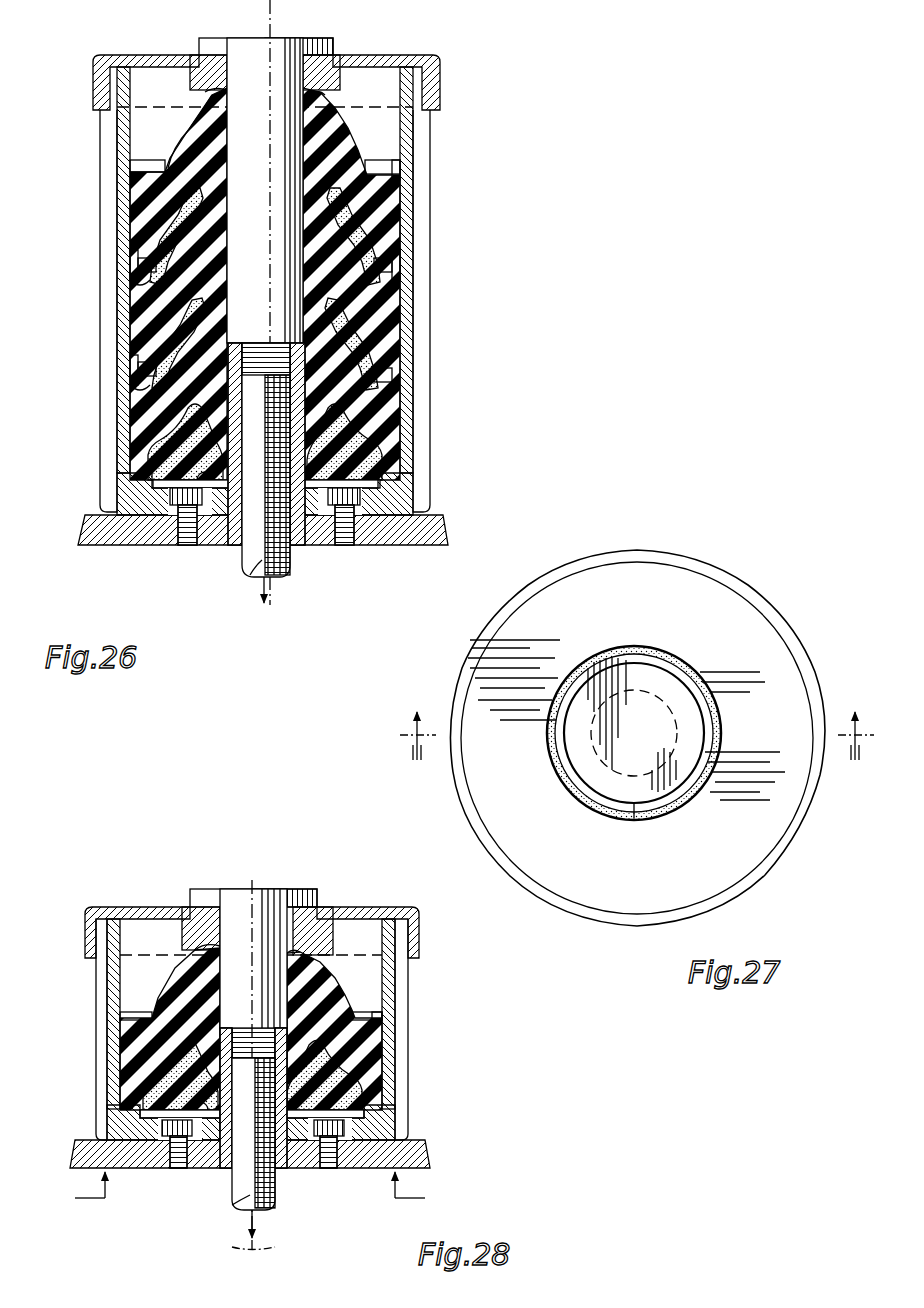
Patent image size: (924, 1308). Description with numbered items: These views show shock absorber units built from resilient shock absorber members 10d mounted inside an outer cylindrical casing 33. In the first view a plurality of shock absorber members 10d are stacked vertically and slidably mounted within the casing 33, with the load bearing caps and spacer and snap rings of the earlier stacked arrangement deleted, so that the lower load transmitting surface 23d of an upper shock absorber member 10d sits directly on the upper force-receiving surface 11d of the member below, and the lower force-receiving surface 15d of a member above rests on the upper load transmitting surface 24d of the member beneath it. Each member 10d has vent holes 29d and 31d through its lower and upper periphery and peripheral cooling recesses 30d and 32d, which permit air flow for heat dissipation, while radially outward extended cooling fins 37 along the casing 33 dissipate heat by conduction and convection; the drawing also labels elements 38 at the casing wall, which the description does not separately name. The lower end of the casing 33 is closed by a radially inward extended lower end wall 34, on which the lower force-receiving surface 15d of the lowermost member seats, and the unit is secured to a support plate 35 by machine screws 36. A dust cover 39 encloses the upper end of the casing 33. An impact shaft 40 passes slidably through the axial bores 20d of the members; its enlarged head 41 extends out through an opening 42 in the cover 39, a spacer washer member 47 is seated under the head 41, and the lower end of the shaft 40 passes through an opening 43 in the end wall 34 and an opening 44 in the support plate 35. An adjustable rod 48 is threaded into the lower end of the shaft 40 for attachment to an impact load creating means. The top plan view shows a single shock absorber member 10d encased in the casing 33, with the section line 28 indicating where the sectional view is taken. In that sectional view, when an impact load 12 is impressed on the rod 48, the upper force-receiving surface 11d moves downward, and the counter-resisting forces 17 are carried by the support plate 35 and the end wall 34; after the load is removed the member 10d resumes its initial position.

In FIG. 26, the shock absorber member 10d is at (150, 210).
In FIG. 28, the shock absorber member 10d is at (385, 1075).
In FIG. 26, the upper force-receiving surface 11d is at (200, 98).
In FIG. 28, the upper force-receiving surface 11d is at (196, 950).
In FIG. 26, the impact load 12 is at (270, 585).
In FIG. 28, the impact load 12 is at (275, 1205).
In FIG. 26, the lower force-receiving surface 15d is at (128, 398).
In FIG. 28, the lower force-receiving surface 15d is at (385, 1120).
In FIG. 28, the counter-resisting forces 17 is at (248, 1190).
In FIG. 26, the bore 20d is at (222, 125).
In FIG. 28, the bore 20d is at (222, 975).
In FIG. 26, the lower load transmitting surface 23d is at (222, 208).
In FIG. 28, the lower load transmitting surface 23d is at (252, 1080).
In FIG. 26, the upper load transmitting surface 24d is at (128, 358).
In FIG. 27, the section line 28— 28 is at (637, 719).
In FIG. 26, the vent holes 29d is at (128, 253).
In FIG. 26, the peripheral cooling recess 30d is at (400, 248).
In FIG. 26, the vent holes 31d is at (140, 285).
In FIG. 28, the vent holes 31d is at (385, 1012).
In FIG. 26, the peripheral cooling recess 32d is at (400, 186).
In FIG. 26, the outer cylindrical casing 33 is at (122, 143).
In FIG. 28, the outer cylindrical casing 33 is at (112, 976).
In FIG. 26, the lower end wall 34 is at (165, 522).
In FIG. 28, the lower end wall 34 is at (150, 1145).
In FIG. 26, the support plate 35 is at (95, 520).
In FIG. 27, the support plate 35 is at (712, 565).
In FIG. 28, the support plate 35 is at (85, 1145).
In FIG. 26, the machine screws 36 is at (185, 548).
In FIG. 28, the machine screws 36 is at (172, 1172).
In FIG. 26, the cooling fins 37 is at (425, 312).
In FIG. 28, the cooling fins 37 is at (98, 1060).
In FIG. 26, the plate 38 is at (122, 176).
In FIG. 28, the plate 38 is at (115, 1012).
In FIG. 26, the dust cover 39 is at (428, 53).
In FIG. 27, the dust cover 39 is at (802, 822).
In FIG. 28, the dust cover 39 is at (430, 938).
In FIG. 26, the impact shaft 40 is at (300, 540).
In FIG. 27, the impact shaft 40 is at (610, 785).
In FIG. 28, the impact shaft 40 is at (284, 1155).
In FIG. 26, the enlarged head 41 is at (268, 46).
In FIG. 27, the enlarged head 41 is at (685, 690).
In FIG. 28, the enlarged head 41 is at (266, 895).
In FIG. 26, the opening 42 is at (325, 62).
In FIG. 27, the opening 42 is at (720, 726).
In FIG. 28, the opening 42 is at (188, 910).
In FIG. 26, the opening 43 is at (216, 522).
In FIG. 28, the opening 43 is at (232, 1045).
In FIG. 26, the opening 44 is at (300, 550).
In FIG. 28, the opening 44 is at (215, 1150).
In FIG. 26, the spacer washer member 47 is at (198, 70).
In FIG. 27, the spacer washer member 47 is at (641, 820).
In FIG. 28, the spacer washer member 47 is at (325, 930).
In FIG. 26, the adjustable rod 48 is at (262, 560).
In FIG. 28, the adjustable rod 48 is at (232, 1200).